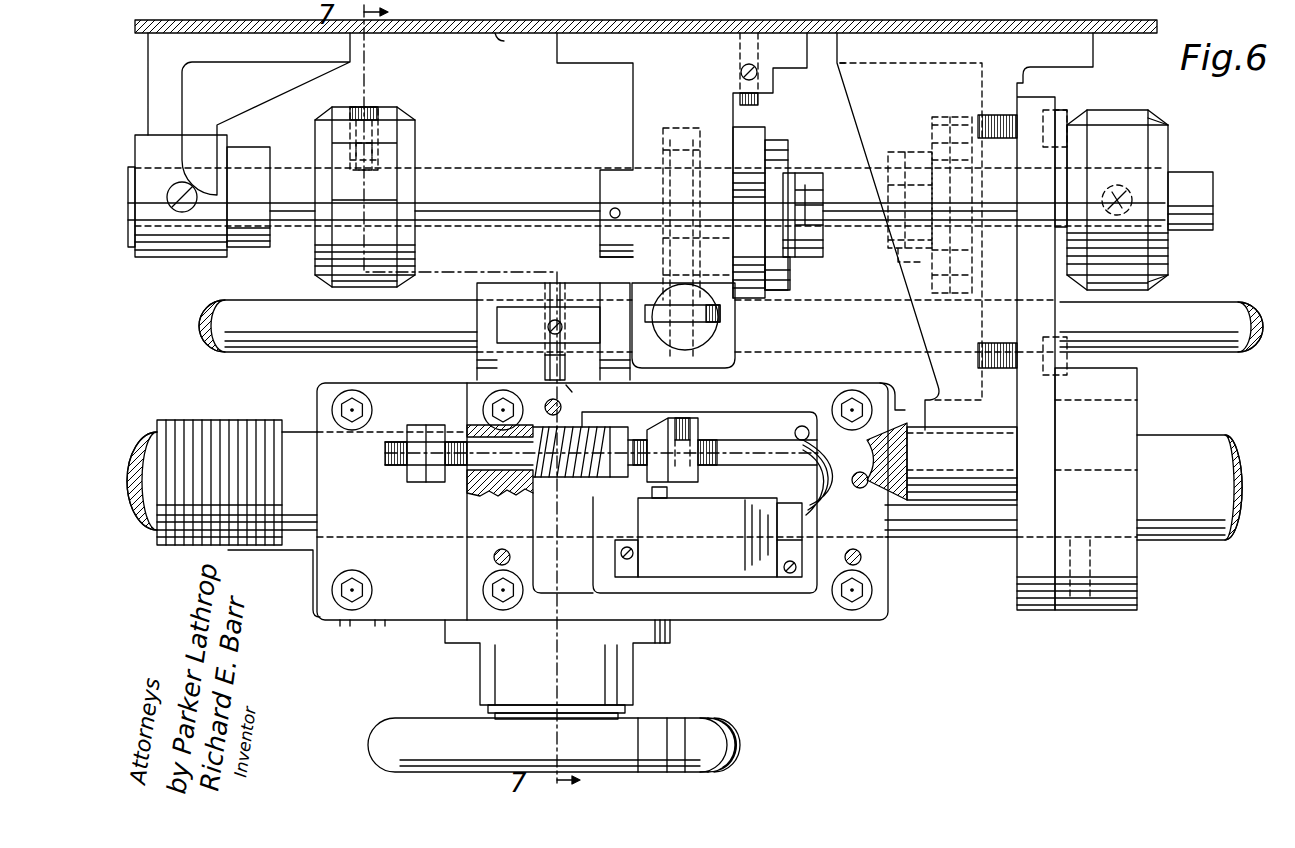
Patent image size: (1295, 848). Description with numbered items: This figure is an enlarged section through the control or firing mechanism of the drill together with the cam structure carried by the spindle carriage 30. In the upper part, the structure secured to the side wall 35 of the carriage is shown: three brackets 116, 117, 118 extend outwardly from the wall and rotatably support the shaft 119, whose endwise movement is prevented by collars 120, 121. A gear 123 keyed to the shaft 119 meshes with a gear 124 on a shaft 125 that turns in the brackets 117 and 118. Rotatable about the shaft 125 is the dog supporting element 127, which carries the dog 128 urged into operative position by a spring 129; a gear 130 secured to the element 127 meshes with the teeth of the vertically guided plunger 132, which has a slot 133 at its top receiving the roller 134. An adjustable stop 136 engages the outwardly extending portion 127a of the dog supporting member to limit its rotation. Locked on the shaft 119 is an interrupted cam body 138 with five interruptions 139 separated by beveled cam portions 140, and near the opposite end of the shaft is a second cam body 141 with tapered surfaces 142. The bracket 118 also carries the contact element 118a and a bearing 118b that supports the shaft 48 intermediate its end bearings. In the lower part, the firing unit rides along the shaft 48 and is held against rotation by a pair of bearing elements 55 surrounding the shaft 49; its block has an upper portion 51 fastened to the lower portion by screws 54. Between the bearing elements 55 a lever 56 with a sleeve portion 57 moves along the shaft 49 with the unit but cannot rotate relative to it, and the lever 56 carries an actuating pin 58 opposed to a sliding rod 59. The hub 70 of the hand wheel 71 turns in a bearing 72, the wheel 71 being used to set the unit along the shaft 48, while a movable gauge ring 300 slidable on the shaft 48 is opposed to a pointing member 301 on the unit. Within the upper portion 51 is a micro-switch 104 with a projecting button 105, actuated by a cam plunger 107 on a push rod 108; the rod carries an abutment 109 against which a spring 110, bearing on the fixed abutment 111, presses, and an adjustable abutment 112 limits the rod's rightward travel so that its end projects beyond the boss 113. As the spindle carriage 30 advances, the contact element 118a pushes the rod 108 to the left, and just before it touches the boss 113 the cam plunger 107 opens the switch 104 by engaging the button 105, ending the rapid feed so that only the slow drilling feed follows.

The spindle carriage 30 is at (642, 21).
The side wall 35 is at (501, 34).
The shaft 48 is at (143, 440).
The shaft 49 is at (319, 343).
The upper block portion 51 is at (425, 606).
The securing screws 54 is at (341, 406).
The bearing elements 55 is at (463, 286).
The lever 56 is at (513, 310).
The sleeve portion 57 is at (590, 292).
The actuating pin 58 is at (560, 292).
The sliding rod 59 is at (571, 387).
The hub 70 is at (632, 717).
The hand wheel 71 is at (726, 721).
The bearing 72 is at (490, 666).
The micro-switch 104 is at (656, 520).
The projecting button 105 is at (646, 498).
The cam plunger 107 is at (663, 425).
The push rod 108 is at (738, 449).
The abutment 109 is at (620, 427).
The spring 110 is at (572, 479).
The fixed abutment 111 is at (527, 488).
The adjustable abutment 112 is at (433, 425).
The boss 113 is at (905, 497).
The bracket 116 is at (156, 90).
The bracket 117 is at (630, 111).
The bracket 118 is at (1075, 58).
The contact element 118a is at (915, 437).
The bearing 118b is at (1118, 600).
The shaft 119 is at (490, 186).
The collar 120 is at (252, 157).
The collar 121 is at (905, 151).
The gear 123 is at (945, 267).
The gear 124 is at (945, 121).
The shaft 125 is at (855, 236).
The dog supporting element 127 is at (756, 131).
The outwardly extending portion 127a is at (746, 199).
The dog 128 is at (784, 268).
The spring 129 is at (780, 176).
The gear 130 is at (680, 136).
The plunger 132 is at (701, 293).
The slot 133 is at (722, 314).
The roller 134 is at (665, 322).
The adjustable stop 136 is at (760, 100).
The interrupted cam body 138 is at (388, 163).
The interruptions 139 is at (405, 128).
The beveled cam portions 140 is at (398, 112).
The cam body 141 is at (1113, 121).
The tapered surfaces 142 is at (1158, 120).
The movable gauge ring 300 is at (205, 421).
The pointing member 301 is at (290, 554).